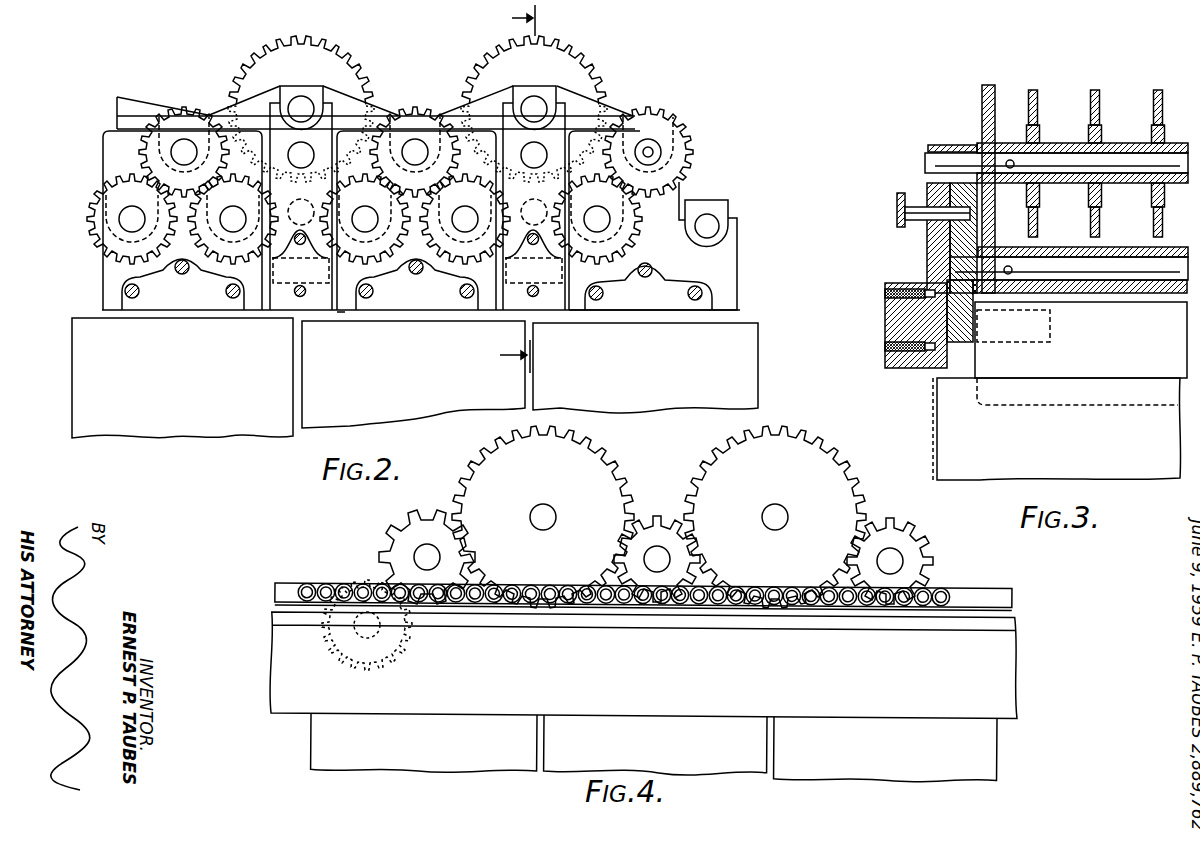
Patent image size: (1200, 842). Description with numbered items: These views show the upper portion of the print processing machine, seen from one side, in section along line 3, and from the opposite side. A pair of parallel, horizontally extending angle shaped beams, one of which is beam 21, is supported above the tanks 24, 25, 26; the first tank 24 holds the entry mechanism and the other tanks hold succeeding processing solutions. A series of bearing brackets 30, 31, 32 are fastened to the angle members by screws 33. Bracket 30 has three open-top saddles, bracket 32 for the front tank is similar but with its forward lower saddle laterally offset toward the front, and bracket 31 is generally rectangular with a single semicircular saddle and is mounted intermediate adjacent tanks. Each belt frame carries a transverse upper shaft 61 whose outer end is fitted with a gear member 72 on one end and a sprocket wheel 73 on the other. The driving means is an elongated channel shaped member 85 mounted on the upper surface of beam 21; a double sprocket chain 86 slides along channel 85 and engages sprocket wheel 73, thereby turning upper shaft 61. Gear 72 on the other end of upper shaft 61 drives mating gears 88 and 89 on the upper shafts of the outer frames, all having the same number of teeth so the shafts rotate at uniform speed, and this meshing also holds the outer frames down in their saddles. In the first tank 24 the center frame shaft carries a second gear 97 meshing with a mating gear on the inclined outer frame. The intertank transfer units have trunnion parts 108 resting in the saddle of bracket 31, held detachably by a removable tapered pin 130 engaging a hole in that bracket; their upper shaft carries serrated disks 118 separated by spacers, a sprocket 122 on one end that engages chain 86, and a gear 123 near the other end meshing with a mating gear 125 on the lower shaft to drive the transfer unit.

In FIG. 2, the gear 123 is at (315, 55).
In FIG. 2, the gear member 72 is at (181, 108).
In FIG. 2, the upper shaft 61 is at (654, 147).
In FIG. 2, the mating gear 88 is at (105, 237).
In FIG. 2, the mating gear 89 is at (230, 250).
In FIG. 2, the bearing bracket 31 is at (330, 113).
In FIG. 3, the bearing bracket 31 is at (928, 251).
In FIG. 2, the mating gear 125 is at (308, 248).
In FIG. 2, the bearing bracket 30 is at (347, 312).
In FIG. 2, the screws 33 is at (688, 293).
In FIG. 2, the bearing bracket 32 is at (726, 254).
In FIG. 2, the tank 26 is at (86, 368).
In FIG. 4, the tank 26 is at (877, 770).
In FIG. 2, the tank 25 is at (475, 405).
In FIG. 4, the tank 25 is at (728, 760).
In FIG. 2, the first tank 24 is at (740, 371).
In FIG. 4, the first tank 24 is at (455, 758).
In FIG. 2, the section line 3— 3 is at (508, 189).
In FIG. 3, the trunnion part 108 is at (947, 143).
In FIG. 3, the serrated disks 118 is at (1160, 93).
In FIG. 3, the tapered pin 130 is at (900, 216).
In FIG. 4, the channel shaped member 85 is at (283, 586).
In FIG. 4, the angle shaped beam 21 is at (1003, 661).
In FIG. 4, the double sprocket chain 86 is at (942, 591).
In FIG. 4, the sprocket 122 is at (578, 461).
In FIG. 4, the second gear 97 is at (397, 524).
In FIG. 4, the sprocket wheel 73 is at (653, 537).